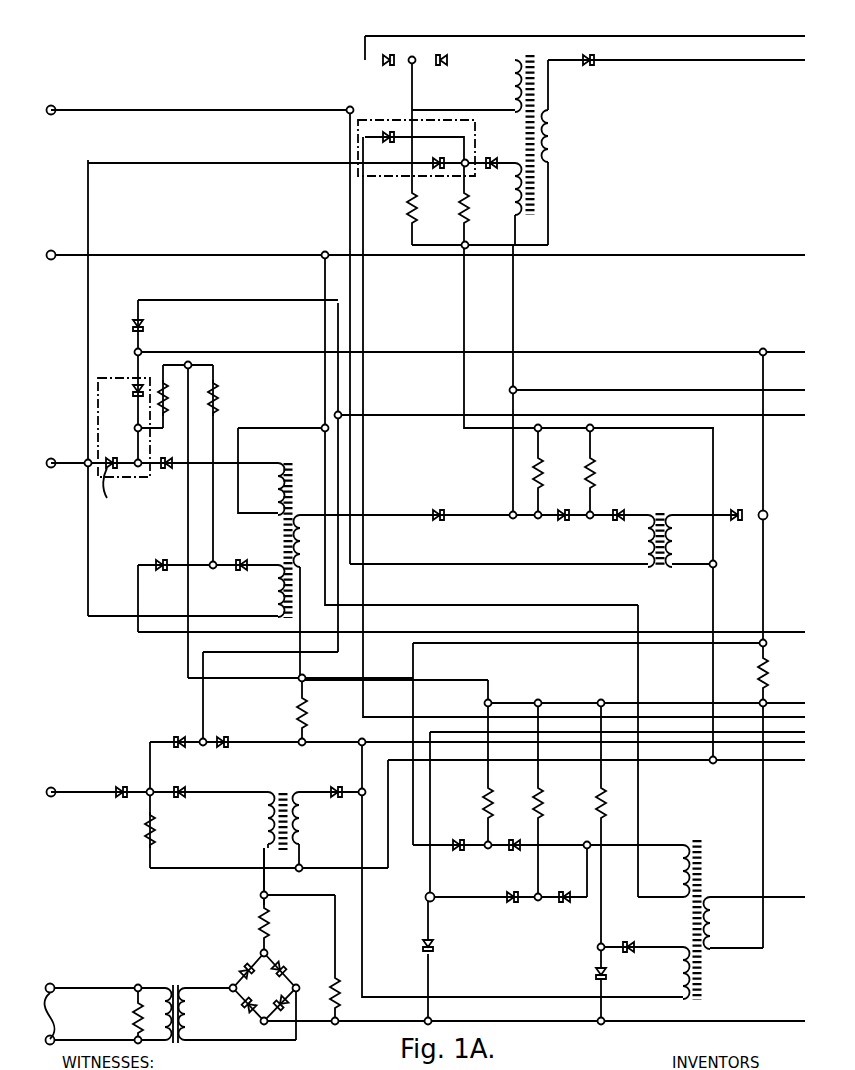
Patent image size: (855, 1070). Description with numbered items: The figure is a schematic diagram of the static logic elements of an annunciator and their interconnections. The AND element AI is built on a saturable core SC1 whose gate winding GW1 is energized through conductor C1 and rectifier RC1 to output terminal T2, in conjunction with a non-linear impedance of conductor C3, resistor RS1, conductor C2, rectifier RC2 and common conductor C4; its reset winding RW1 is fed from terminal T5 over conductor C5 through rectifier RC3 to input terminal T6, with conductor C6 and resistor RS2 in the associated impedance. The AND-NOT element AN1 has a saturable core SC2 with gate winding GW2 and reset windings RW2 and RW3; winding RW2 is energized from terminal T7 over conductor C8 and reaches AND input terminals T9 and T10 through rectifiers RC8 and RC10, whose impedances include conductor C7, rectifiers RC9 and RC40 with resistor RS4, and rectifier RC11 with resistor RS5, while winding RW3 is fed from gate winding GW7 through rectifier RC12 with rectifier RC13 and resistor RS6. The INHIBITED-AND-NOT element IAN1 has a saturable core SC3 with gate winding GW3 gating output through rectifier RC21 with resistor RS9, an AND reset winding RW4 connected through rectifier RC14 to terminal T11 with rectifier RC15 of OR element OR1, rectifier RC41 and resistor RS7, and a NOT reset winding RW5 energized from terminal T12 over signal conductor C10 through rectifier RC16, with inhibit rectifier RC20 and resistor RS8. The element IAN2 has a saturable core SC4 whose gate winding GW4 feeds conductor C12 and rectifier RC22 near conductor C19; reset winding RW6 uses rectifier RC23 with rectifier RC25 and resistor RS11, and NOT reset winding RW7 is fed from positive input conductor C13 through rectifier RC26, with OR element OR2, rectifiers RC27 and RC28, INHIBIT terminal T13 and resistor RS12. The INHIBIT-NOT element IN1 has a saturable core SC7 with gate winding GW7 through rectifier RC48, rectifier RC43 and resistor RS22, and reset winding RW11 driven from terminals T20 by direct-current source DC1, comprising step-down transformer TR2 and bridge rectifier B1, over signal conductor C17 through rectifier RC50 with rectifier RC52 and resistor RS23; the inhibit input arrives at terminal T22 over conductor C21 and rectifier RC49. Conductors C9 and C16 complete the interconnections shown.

The conductor C19 is at (669, 36).
The conductor C12 is at (746, 60).
The rectifier RC25 is at (387, 65).
The rectifier RC23 is at (452, 60).
The rectifier RC22 is at (598, 60).
The reset winding RW6 is at (514, 84).
The saturable core SC4 is at (536, 53).
The gate winding GW4 is at (550, 140).
The INHIBITED-AND-NOT element IAN2 is at (605, 101).
The rectifier RC27 is at (390, 131).
The terminal T5 is at (51, 106).
The OR element OR2 is at (512, 137).
The rectifier RC28 is at (454, 158).
The rectifier RC26 is at (478, 157).
The INHIBIT input terminal T13 is at (462, 166).
The NOT reset winding RW7 is at (516, 194).
The resistor RS11 is at (406, 212).
The resistor RS12 is at (463, 208).
The conductor C5 is at (363, 207).
The conductor C8 is at (186, 255).
The terminal T7 is at (51, 250).
The rectifier RC2 is at (145, 329).
The rectifier RC15 is at (136, 378).
The OR element OR1 is at (130, 421).
The resistor RS8 is at (218, 388).
The INHIBITED-AND-NOT element IAN1 is at (283, 416).
The resistor RS7 is at (165, 422).
The input terminal T11 is at (132, 456).
The terminal T12 is at (57, 448).
The rectifier RC14 is at (174, 474).
The rectifier RC41 is at (107, 504).
The signal conductor C10 is at (88, 512).
The saturable core SC3 is at (310, 455).
The AND reset winding RW4 is at (272, 520).
The gate winding GW3 is at (306, 515).
The input rectifier RC20 is at (164, 558).
The rectifier RC16 is at (216, 558).
The NOT reset winding RW5 is at (266, 595).
The conductor C1 is at (464, 321).
The conductor C2 is at (680, 352).
The conductor C6 is at (692, 390).
The common conductor C4 is at (692, 415).
The resistor RS9 is at (538, 454).
The resistor RS2 is at (593, 454).
The AND element AI is at (645, 485).
The rectifier RC21 is at (445, 506).
The positive input conductor C13 is at (508, 512).
The input terminal T6 is at (582, 508).
The rectifier RC3 is at (596, 508).
The saturable core SC1 is at (653, 508).
The rectifier RC1 is at (754, 508).
The output terminal T2 is at (767, 513).
The reset winding RW1 is at (646, 548).
The gate winding GW1 is at (674, 545).
The resistor RS1 is at (760, 674).
The resistor RS22 is at (296, 702).
The conductor C3 is at (686, 703).
The rectifier RC52 is at (174, 738).
The rectifier RC43 is at (224, 737).
The conductor C16 is at (392, 741).
The terminal T22 is at (51, 787).
The conductor C21 is at (102, 792).
The rectifier RC49 is at (126, 800).
The rectifier RC50 is at (170, 790).
The saturable core SC7 is at (284, 783).
The rectifier RC48 is at (341, 788).
The resistor RS23 is at (144, 830).
The reset winding RW11 is at (268, 818).
The INHIBIT-NOT element IN1 is at (246, 848).
The gate winding GW7 is at (301, 832).
The signal conductor C17 is at (264, 886).
The resistor RS5 is at (482, 798).
The resistor RS4 is at (536, 788).
The resistor RS6 is at (598, 788).
The AND-NOT element AN1 is at (696, 818).
The rectifier RC11 is at (474, 839).
The AND input terminal T10 is at (484, 850).
The rectifier RC10 is at (514, 852).
The AND input terminal T9 is at (428, 894).
The rectifier RC40 is at (514, 904).
The rectifier RC8 is at (568, 904).
The conductor C9 is at (362, 912).
The rectifier RC9 is at (435, 952).
The rectifier RC12 is at (616, 944).
The rectifier RC13 is at (596, 976).
The AND reset winding RW2 is at (682, 879).
The saturable core SC2 is at (702, 844).
The gate winding GW2 is at (710, 918).
The NOT reset winding RW3 is at (678, 978).
The conductor C7 is at (748, 1021).
The direct-current source DC1 is at (186, 976).
The bridge rectifier B1 is at (274, 997).
The terminals T20 is at (67, 1014).
The step-down transformer TR2 is at (176, 1044).